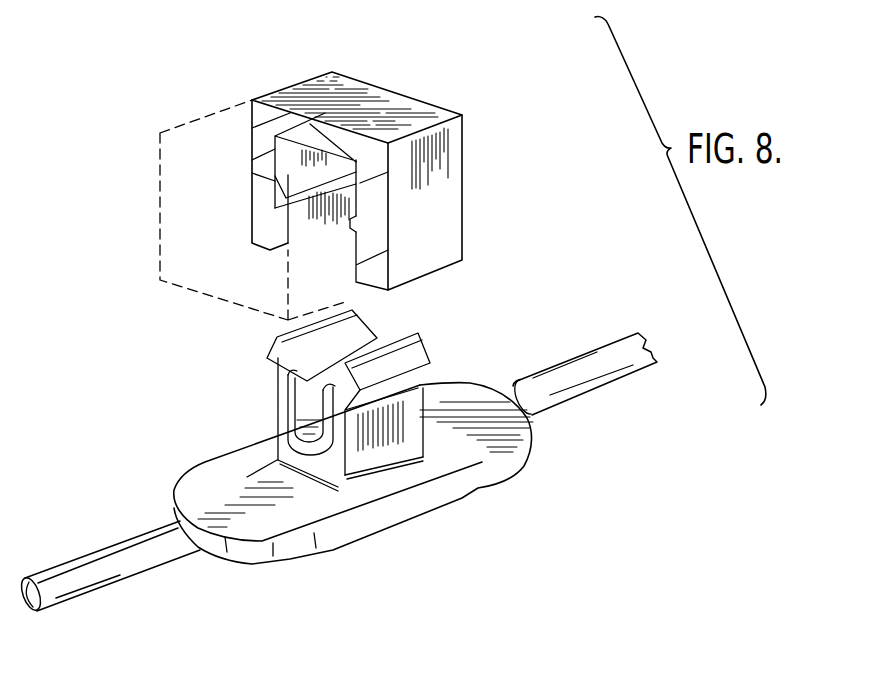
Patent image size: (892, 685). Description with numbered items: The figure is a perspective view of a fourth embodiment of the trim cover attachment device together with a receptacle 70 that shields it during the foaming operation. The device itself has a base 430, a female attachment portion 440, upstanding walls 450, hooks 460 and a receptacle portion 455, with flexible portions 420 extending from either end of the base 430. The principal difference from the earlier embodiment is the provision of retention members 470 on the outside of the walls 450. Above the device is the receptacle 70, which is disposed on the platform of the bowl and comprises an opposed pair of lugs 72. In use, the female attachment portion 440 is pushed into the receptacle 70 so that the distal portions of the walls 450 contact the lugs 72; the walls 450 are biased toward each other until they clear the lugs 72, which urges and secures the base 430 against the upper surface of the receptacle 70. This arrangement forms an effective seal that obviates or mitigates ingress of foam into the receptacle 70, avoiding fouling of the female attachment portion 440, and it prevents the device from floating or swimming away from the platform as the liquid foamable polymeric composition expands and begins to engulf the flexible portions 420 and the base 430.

The receptacle 70 is at (455, 162).
The lugs 72 is at (282, 197).
The flexible portions 420 is at (607, 350).
The base 430 is at (262, 526).
The female attachment portion 440 is at (338, 449).
The upstanding walls 450 is at (280, 420).
The receptacle portion 455 is at (244, 502).
The hooks 460 is at (289, 388).
The retention members 470 is at (268, 359).